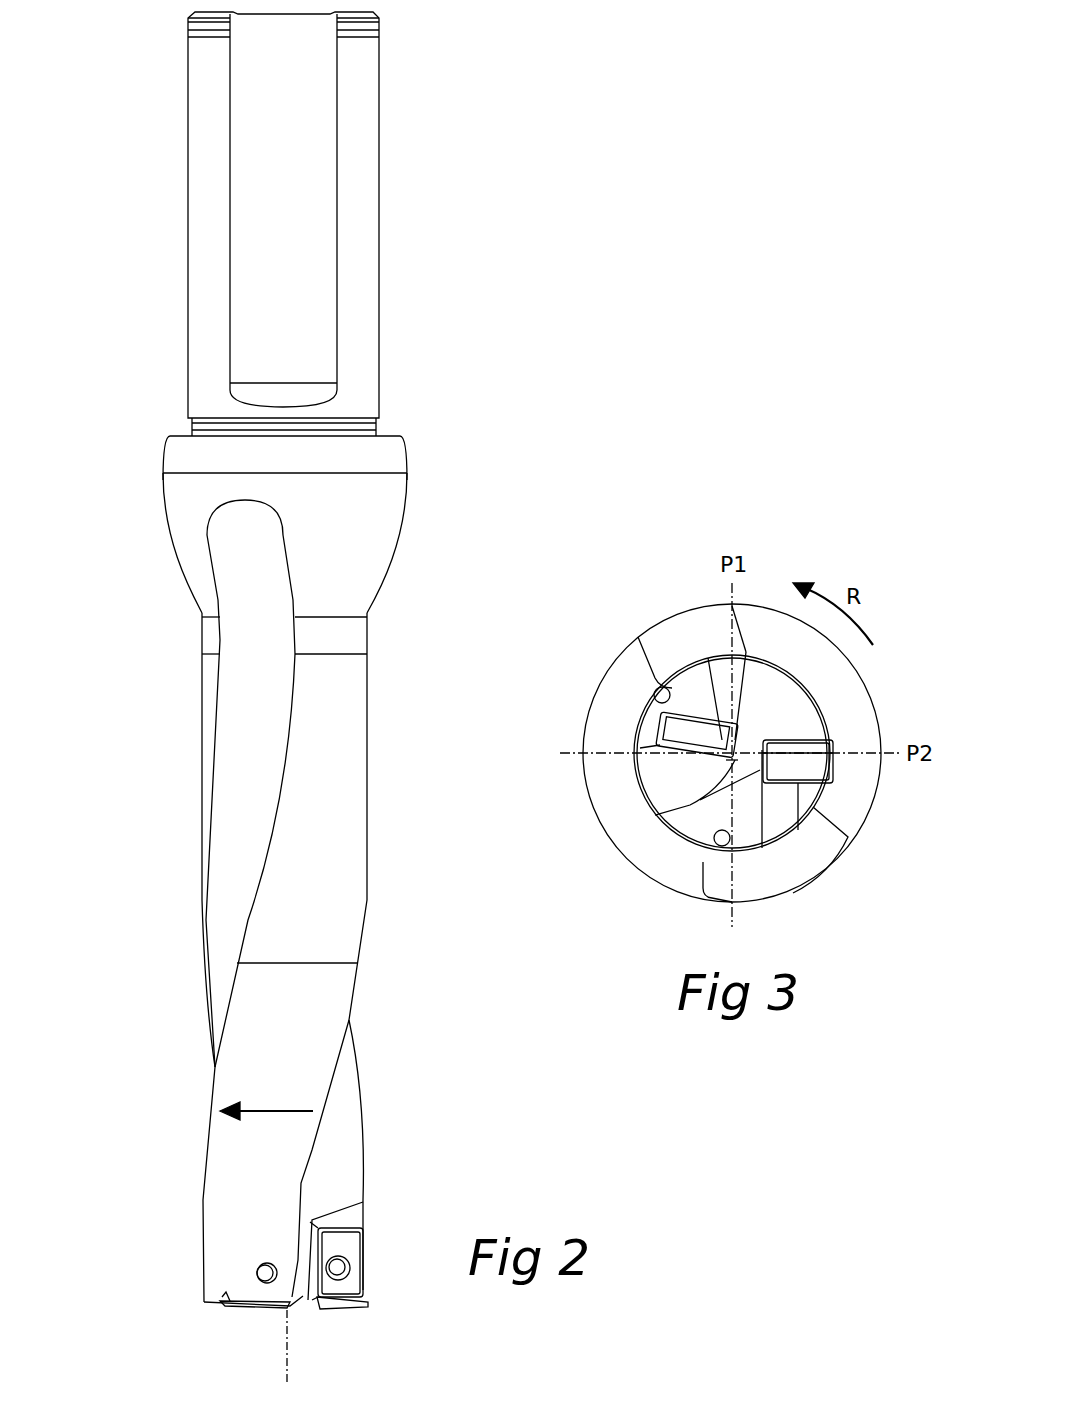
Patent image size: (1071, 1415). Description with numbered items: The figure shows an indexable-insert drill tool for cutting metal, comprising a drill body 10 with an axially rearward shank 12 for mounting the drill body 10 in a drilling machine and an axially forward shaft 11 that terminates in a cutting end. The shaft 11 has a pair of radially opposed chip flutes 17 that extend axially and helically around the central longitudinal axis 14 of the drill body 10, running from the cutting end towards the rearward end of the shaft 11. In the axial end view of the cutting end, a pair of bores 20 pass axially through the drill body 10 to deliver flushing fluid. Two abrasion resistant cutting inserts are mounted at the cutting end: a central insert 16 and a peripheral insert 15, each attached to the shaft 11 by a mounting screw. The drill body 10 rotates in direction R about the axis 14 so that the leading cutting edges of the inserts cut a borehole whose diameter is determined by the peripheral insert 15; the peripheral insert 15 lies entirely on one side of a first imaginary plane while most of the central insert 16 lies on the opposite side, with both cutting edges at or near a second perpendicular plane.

In FIG. 2, the drill body 10 is at (126, 471).
In FIG. 2, the shaft 11 is at (383, 819).
In FIG. 2, the shank 12 is at (414, 226).
In FIG. 2, the central longitudinal axis 14 is at (287, 1368).
In FIG. 3, the central longitudinal axis 14 is at (700, 800).
In FIG. 2, the peripheral insert 15 is at (355, 1278).
In FIG. 3, the peripheral insert 15 is at (817, 765).
In FIG. 2, the central insert 16 is at (242, 1310).
In FIG. 3, the central insert 16 is at (675, 735).
In FIG. 2, the chip flutes 17 is at (268, 773).
In FIG. 3, the bores 20 is at (655, 698).